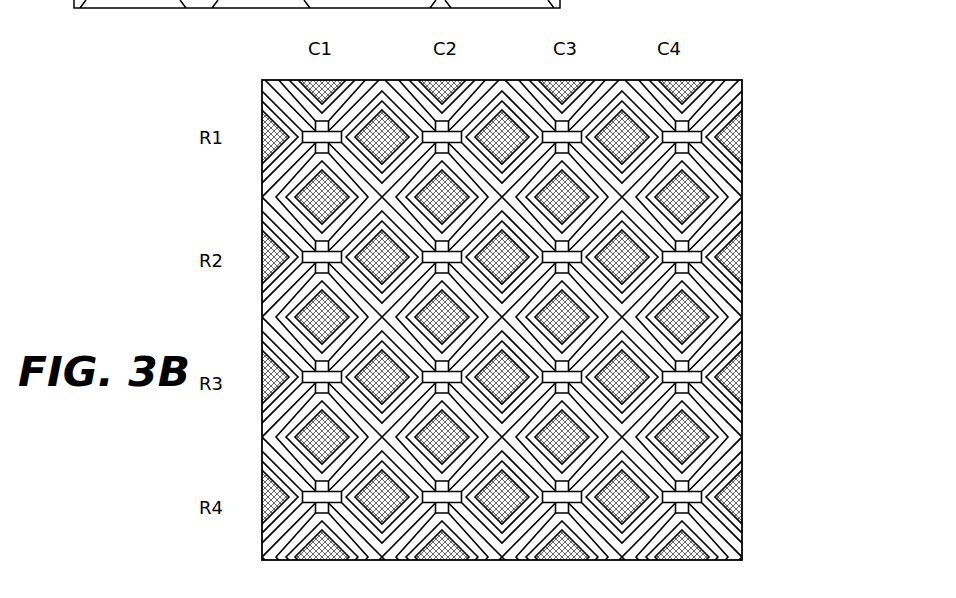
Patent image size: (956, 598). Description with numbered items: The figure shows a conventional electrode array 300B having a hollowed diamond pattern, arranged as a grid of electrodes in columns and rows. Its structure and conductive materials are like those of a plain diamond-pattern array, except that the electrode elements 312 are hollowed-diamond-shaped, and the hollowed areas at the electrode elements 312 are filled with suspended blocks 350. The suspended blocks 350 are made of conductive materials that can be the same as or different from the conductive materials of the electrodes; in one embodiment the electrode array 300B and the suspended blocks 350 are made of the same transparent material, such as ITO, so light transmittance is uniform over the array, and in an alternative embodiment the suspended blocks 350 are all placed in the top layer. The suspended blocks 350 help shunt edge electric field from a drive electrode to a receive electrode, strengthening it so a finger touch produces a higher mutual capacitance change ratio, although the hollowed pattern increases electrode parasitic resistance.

The electrode array 300B is at (525, 302).
The electrode elements 312 is at (652, 245).
The suspended blocks 350 is at (650, 373).